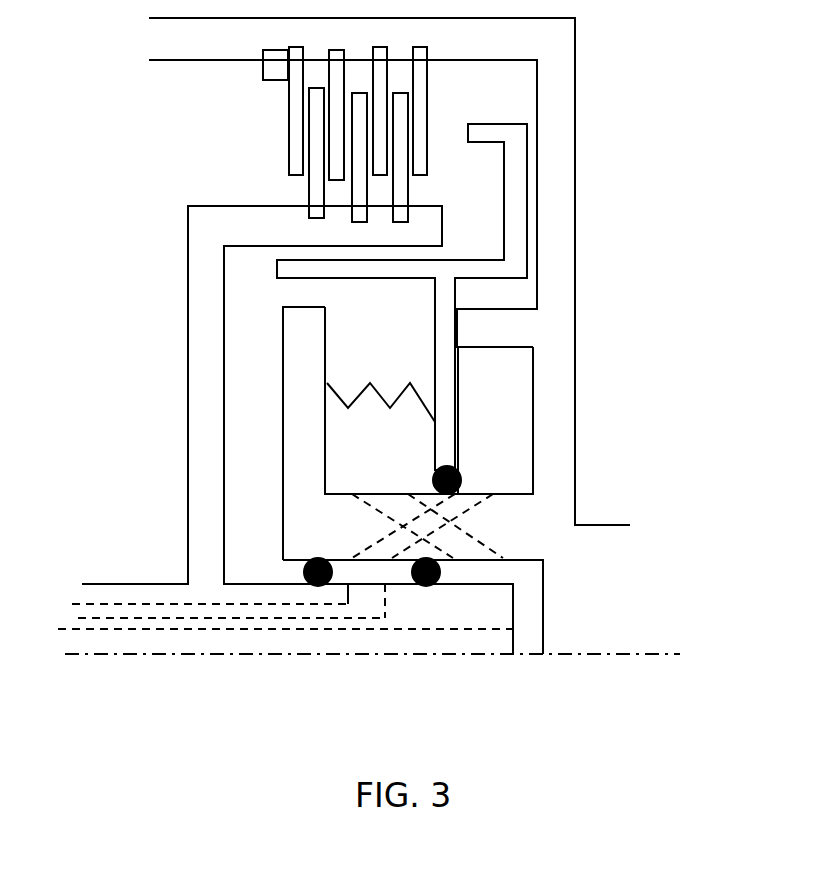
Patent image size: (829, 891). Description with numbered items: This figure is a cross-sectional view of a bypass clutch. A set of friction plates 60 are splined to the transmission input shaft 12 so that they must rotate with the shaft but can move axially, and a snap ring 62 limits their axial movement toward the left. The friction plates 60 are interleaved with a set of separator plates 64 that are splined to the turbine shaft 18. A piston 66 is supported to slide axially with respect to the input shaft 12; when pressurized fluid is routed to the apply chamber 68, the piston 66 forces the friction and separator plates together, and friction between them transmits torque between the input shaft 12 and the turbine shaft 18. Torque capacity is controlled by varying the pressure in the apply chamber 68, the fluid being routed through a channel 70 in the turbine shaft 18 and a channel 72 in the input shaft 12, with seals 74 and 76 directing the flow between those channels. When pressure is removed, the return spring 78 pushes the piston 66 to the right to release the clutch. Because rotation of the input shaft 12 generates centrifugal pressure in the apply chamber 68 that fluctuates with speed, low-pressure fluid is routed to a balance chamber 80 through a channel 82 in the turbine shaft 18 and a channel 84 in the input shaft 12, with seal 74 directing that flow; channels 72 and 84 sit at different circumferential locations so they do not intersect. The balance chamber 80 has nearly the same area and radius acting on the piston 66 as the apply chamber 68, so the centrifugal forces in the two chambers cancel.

The transmission input shaft 12 is at (575, 190).
The turbine shaft 18 is at (188, 390).
The friction plates 60 is at (289, 138).
The snap ring 62 is at (263, 80).
The separator plates 64 is at (310, 188).
The piston 66 is at (407, 278).
The apply chamber 68 is at (495, 420).
The channel in turbine shaft 70 is at (345, 600).
The channel in input shaft 72 is at (470, 505).
The seal 74 is at (440, 567).
The seal 76 is at (307, 575).
The return spring 78 is at (362, 382).
The balance chamber 80 is at (391, 400).
The channel in turbine shaft 82 is at (483, 638).
The channel in input shaft 84 is at (463, 540).